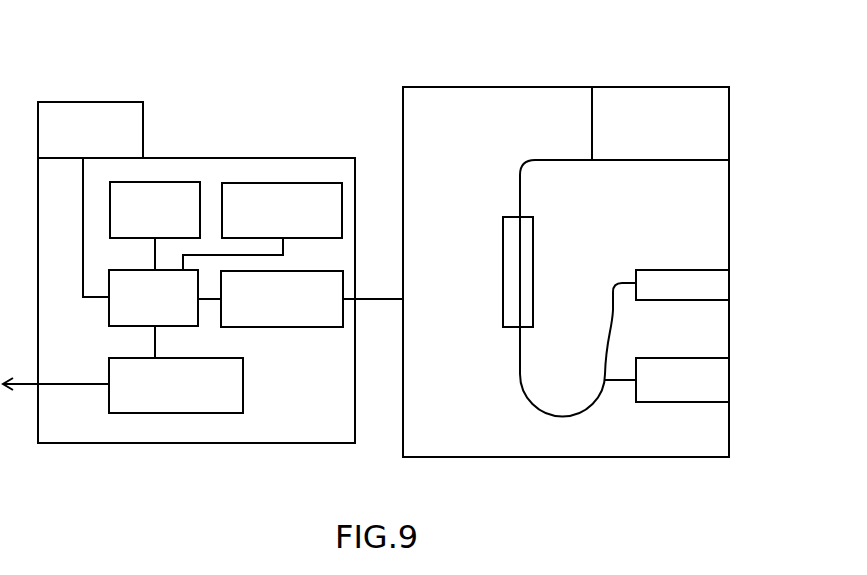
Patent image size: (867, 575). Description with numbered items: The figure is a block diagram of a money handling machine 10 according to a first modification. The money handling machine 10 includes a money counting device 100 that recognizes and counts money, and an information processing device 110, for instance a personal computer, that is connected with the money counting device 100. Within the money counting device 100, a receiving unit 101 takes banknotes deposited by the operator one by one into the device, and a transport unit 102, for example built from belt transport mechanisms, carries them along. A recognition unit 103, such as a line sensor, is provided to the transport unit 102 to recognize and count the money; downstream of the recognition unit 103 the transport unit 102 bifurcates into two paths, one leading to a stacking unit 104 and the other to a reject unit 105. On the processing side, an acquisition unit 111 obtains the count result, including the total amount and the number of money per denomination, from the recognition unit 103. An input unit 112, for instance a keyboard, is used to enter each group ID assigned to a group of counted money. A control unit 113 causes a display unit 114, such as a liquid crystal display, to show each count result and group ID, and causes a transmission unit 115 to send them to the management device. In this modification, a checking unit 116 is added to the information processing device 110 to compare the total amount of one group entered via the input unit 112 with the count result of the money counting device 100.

The money handling machine 10 is at (724, 36).
The money counting device 100 is at (457, 87).
The receiving unit 101 is at (592, 118).
The transport unit 102 is at (519, 182).
The recognition unit 103 is at (503, 247).
The stacking unit 104 is at (722, 382).
The reject unit 105 is at (722, 286).
The information processing device 110 is at (266, 158).
The acquisition unit 111 is at (310, 330).
The input unit 112 is at (173, 182).
The control unit 113 is at (109, 310).
The display unit 114 is at (85, 101).
The transmission unit 115 is at (243, 404).
The checking unit 116 is at (322, 183).